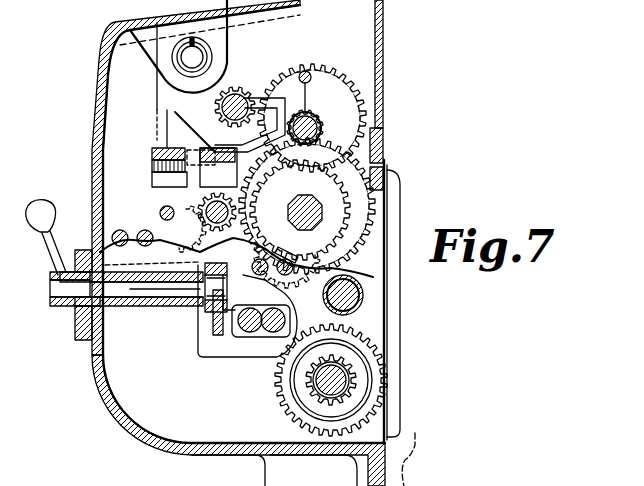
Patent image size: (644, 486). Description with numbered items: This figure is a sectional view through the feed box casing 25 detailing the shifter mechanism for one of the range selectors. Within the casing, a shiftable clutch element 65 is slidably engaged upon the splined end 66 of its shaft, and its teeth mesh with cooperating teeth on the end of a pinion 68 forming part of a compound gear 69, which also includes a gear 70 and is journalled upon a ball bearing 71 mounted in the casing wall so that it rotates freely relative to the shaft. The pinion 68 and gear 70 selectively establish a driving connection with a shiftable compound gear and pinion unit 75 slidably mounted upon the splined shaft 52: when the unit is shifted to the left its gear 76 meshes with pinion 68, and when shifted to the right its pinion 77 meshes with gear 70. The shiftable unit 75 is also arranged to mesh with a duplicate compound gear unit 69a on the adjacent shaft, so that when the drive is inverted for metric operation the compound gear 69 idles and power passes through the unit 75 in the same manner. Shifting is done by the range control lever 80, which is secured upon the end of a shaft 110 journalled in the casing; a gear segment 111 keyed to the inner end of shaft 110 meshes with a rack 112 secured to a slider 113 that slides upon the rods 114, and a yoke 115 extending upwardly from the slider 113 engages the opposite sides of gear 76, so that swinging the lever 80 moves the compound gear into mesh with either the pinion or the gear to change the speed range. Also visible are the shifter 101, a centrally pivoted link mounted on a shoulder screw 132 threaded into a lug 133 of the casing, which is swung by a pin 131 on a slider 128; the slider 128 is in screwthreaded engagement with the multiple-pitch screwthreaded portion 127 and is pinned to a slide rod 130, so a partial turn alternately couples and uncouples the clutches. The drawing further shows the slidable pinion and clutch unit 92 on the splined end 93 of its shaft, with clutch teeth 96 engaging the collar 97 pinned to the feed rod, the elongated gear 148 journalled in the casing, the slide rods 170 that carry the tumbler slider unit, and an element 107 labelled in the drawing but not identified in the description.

The casing 25 is at (88, 164).
The splined shaft 52 is at (322, 222).
The shiftable clutch element 65 is at (324, 129).
The splined end 66 is at (305, 114).
The pinion 68 is at (320, 120).
The compound gear 69 is at (325, 88).
The compound gear unit 69a is at (160, 213).
The gear 70 is at (346, 82).
The ball bearing 71 is at (307, 72).
The shiftable compound gear and pinion unit 75 is at (376, 198).
The gear 76 is at (370, 212).
The pinion 77 is at (342, 205).
The range control lever 80 is at (44, 240).
The slidable pinion and clutch unit 92 is at (365, 310).
The splined end 93 is at (362, 296).
The clutch teeth 96 is at (314, 393).
The collar 97 is at (327, 382).
The shifter 101 is at (218, 140).
The plate 107 is at (306, 258).
The shaft 110 is at (155, 295).
The gear segment 111 is at (213, 312).
The rack 112 is at (210, 333).
The slider 113 is at (250, 335).
The rods 114 is at (225, 360).
The yoke 115 is at (275, 335).
The screwthreaded portion 127 is at (252, 90).
The slider 128 is at (237, 88).
The slide rod 130 is at (186, 110).
The pin 131 is at (262, 90).
The shoulder screw 132 is at (168, 148).
The lug 133 is at (153, 152).
The elongated gear 148 is at (187, 62).
The slide rods 170 is at (145, 231).